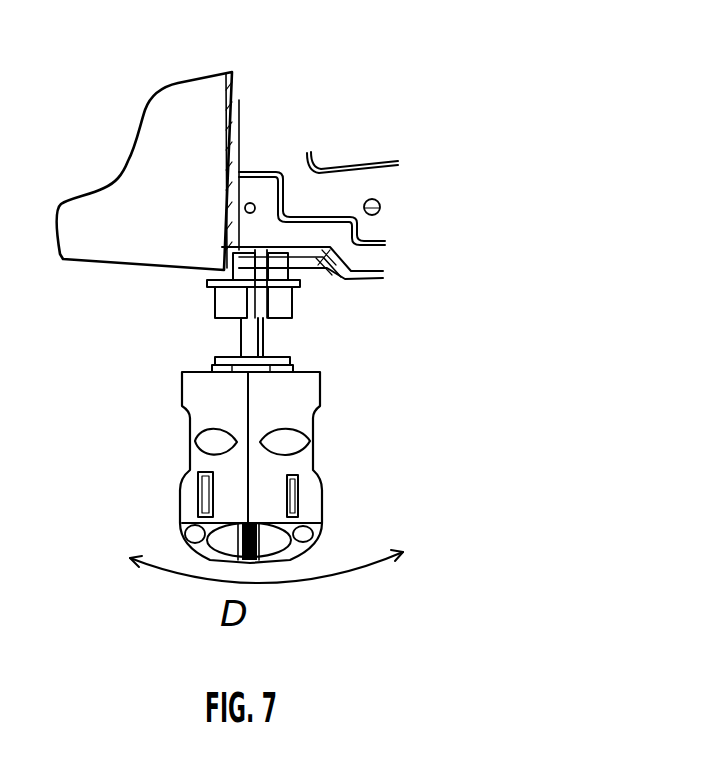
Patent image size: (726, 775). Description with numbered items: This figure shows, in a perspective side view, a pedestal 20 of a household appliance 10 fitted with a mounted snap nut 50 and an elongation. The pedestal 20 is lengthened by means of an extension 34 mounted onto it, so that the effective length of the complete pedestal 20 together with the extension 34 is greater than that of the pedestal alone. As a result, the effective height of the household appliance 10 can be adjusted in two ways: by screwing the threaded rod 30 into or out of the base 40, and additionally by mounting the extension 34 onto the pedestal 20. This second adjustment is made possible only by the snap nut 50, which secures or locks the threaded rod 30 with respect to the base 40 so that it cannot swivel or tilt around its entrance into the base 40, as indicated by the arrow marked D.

The household appliance 10 is at (272, 118).
The pedestal 20 is at (169, 463).
The threaded rod 30 is at (247, 335).
The extension 34 is at (200, 463).
The base 40 is at (258, 222).
The snap nut 50 is at (230, 298).